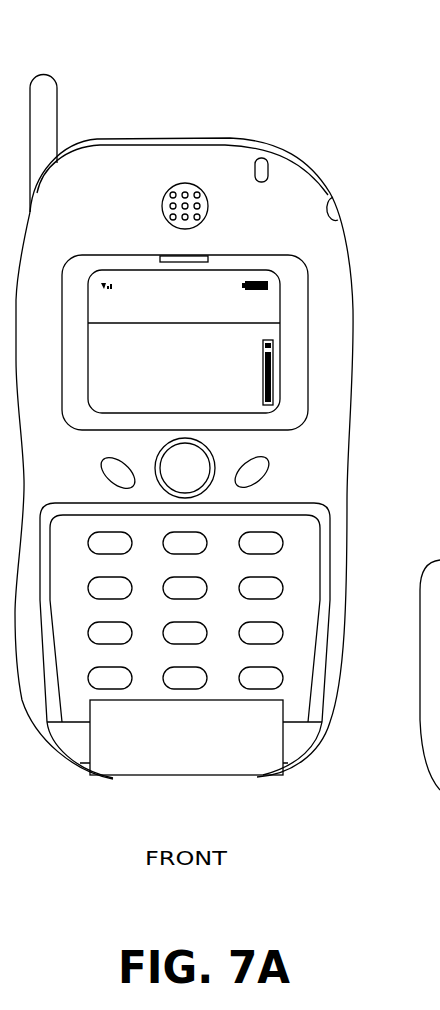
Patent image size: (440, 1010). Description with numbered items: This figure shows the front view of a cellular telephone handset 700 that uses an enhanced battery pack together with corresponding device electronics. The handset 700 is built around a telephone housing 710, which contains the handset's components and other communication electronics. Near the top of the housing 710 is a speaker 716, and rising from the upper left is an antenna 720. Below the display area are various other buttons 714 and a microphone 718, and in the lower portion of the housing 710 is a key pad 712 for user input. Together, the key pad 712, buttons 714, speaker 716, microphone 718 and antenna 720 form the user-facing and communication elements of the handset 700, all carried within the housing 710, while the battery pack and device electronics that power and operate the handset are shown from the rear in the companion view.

The cellular telephone handset 700 is at (439, 45).
The telephone housing 710 is at (350, 357).
The key pad 712 is at (311, 578).
The buttons 714 is at (270, 468).
The speaker 716 is at (182, 183).
The microphone 718 is at (185, 468).
The antenna 720 is at (47, 73).